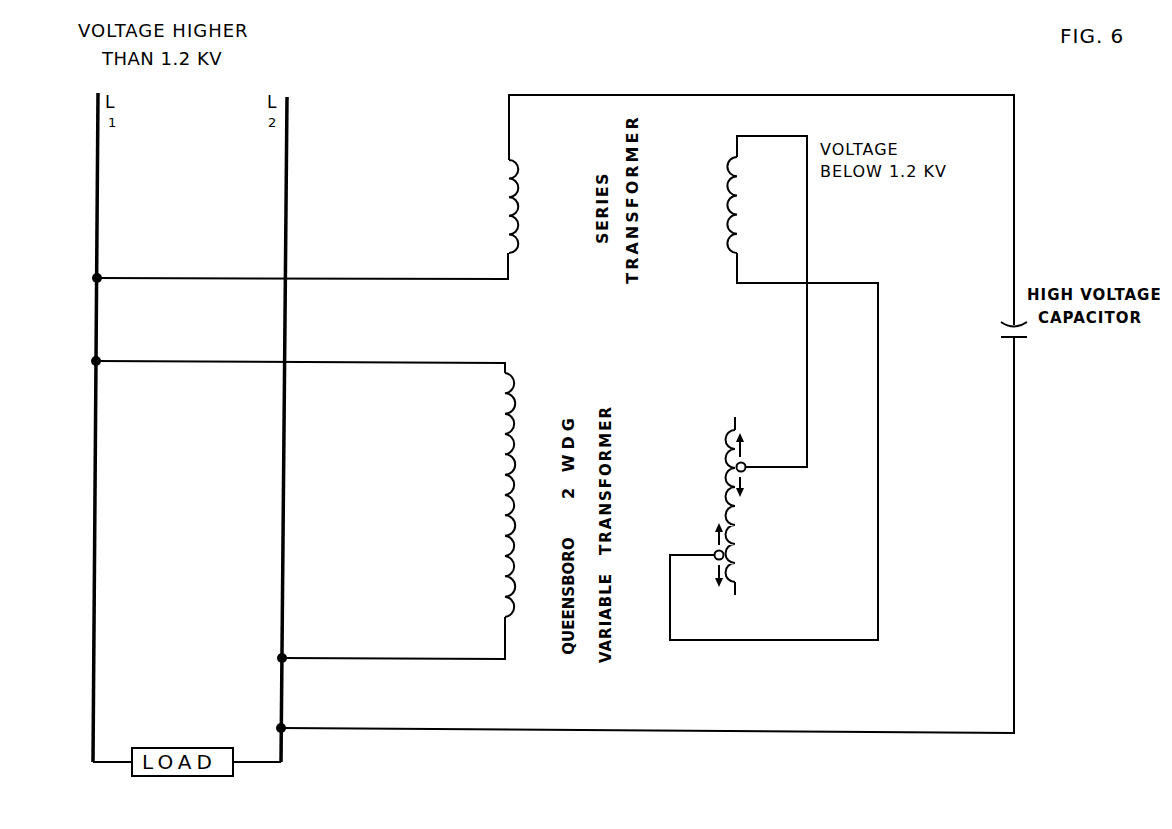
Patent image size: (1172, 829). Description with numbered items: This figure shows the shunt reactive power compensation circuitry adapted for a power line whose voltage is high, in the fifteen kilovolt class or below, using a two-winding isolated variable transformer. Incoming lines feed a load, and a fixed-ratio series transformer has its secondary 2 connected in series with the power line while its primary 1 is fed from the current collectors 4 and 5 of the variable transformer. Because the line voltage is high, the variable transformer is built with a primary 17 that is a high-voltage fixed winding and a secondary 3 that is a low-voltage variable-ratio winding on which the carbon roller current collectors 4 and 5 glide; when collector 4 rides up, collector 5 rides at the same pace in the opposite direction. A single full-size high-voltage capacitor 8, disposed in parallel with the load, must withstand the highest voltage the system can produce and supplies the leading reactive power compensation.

The primary of fixed-ratio series transformer 1 is at (718, 205).
The secondary of fixed-ratio series transformer 2 is at (523, 206).
The variable transformer 3 is at (716, 506).
The current collector 4 is at (749, 465).
The current collector 5 is at (704, 555).
The capacitor 8 is at (1024, 341).
The primary of two-winding variable transformer 17 is at (524, 495).